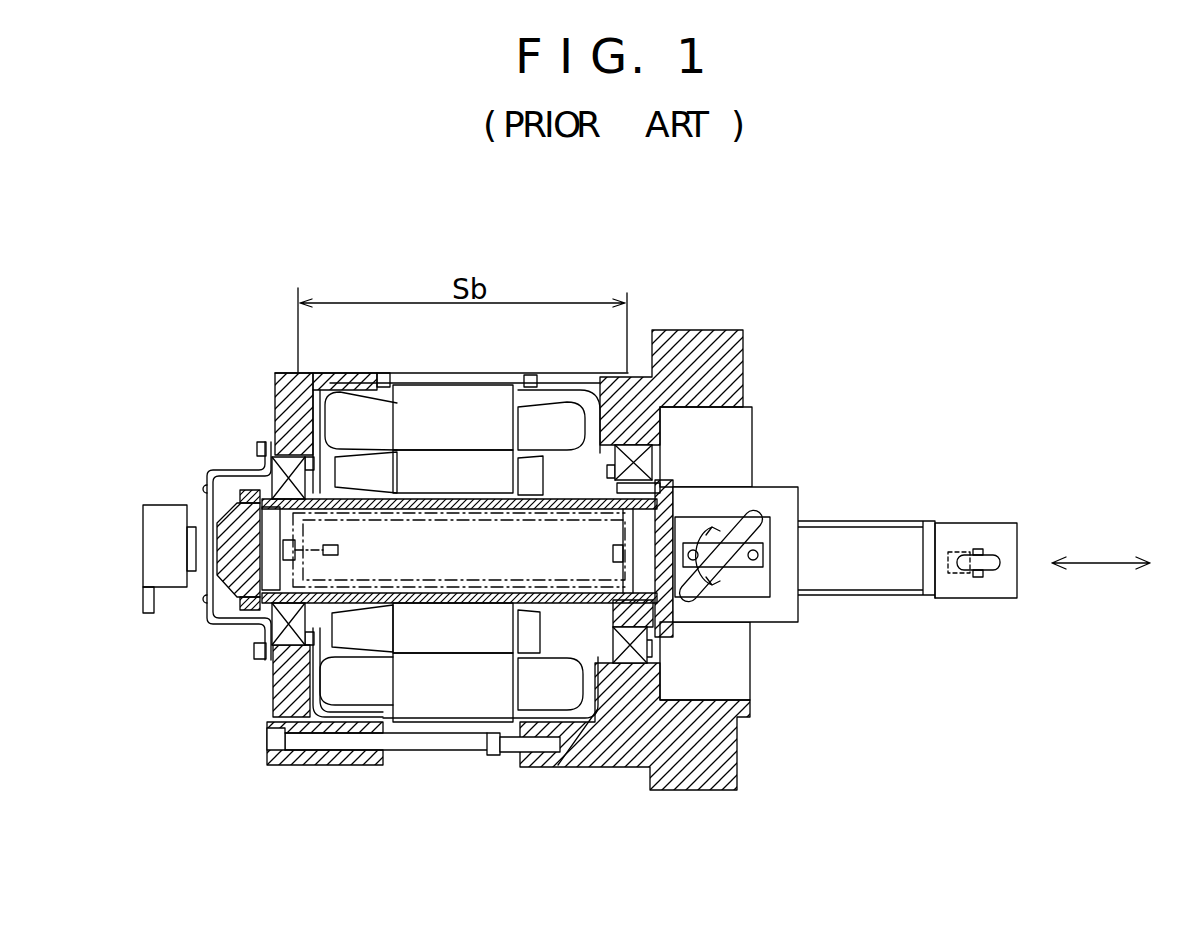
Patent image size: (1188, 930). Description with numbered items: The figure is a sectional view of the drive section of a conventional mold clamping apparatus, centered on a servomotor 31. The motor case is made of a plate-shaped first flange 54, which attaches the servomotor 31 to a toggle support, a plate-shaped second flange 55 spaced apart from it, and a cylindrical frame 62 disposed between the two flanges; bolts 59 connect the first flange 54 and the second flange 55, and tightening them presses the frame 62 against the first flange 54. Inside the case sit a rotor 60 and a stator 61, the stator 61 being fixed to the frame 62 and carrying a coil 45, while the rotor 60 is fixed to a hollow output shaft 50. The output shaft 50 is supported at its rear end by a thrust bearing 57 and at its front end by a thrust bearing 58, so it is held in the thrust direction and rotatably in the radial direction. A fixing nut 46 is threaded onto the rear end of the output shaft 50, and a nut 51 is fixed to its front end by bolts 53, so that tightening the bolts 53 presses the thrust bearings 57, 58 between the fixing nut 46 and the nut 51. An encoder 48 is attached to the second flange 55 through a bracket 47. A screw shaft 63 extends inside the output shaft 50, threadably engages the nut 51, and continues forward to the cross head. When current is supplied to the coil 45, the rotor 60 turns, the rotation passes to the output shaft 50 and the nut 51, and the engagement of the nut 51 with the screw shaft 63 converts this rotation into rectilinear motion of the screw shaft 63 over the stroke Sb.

The servomotor 31 is at (607, 594).
The coil 45 is at (345, 405).
The fixing nut 46 is at (250, 488).
The bracket 47 is at (212, 470).
The encoder 48 is at (146, 515).
The hollow output shaft 50 is at (290, 645).
The nut 51 is at (785, 488).
The bolts 53 is at (637, 490).
The first flange 54 is at (742, 365).
The second flange 55 is at (300, 767).
The thrust bearing 57 is at (258, 607).
The thrust bearing 58 is at (650, 640).
The bolts 59 is at (407, 745).
The rotor 60 is at (500, 633).
The stator 61 is at (493, 695).
The frame 62 is at (483, 727).
The screw shaft 63 is at (888, 521).